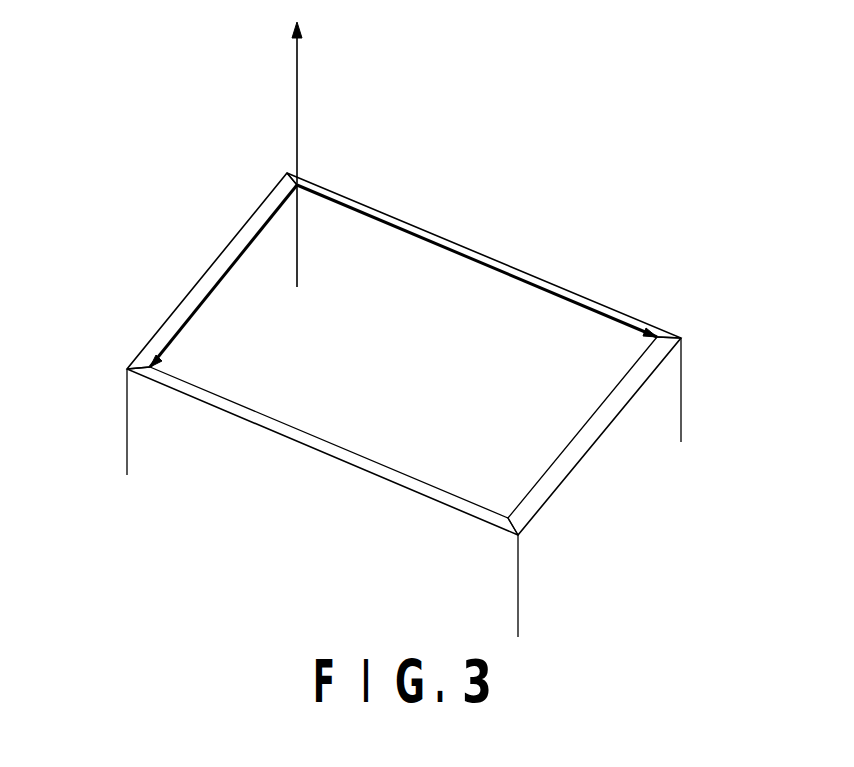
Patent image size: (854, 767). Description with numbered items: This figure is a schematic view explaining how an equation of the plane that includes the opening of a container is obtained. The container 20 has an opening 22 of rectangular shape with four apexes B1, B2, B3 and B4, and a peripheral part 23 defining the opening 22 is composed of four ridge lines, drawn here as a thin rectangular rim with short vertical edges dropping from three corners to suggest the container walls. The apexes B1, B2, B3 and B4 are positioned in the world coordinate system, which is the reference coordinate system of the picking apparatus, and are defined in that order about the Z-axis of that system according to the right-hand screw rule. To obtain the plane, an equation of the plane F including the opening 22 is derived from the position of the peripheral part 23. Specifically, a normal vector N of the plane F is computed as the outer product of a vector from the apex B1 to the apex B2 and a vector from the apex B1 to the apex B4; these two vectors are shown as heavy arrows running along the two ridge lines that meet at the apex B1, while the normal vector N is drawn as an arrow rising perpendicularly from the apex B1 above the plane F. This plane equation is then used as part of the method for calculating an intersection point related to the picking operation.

The container 20 is at (647, 418).
The opening 22 is at (535, 343).
The peripheral part 23 is at (240, 403).
The normal vector N is at (286, 154).
The plane F is at (389, 339).
The apex B1 is at (302, 183).
The apex B2 is at (148, 363).
The apex B3 is at (500, 517).
The apex B4 is at (662, 325).